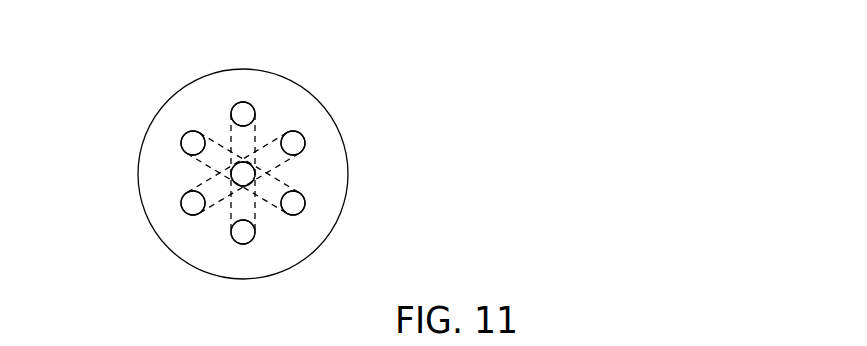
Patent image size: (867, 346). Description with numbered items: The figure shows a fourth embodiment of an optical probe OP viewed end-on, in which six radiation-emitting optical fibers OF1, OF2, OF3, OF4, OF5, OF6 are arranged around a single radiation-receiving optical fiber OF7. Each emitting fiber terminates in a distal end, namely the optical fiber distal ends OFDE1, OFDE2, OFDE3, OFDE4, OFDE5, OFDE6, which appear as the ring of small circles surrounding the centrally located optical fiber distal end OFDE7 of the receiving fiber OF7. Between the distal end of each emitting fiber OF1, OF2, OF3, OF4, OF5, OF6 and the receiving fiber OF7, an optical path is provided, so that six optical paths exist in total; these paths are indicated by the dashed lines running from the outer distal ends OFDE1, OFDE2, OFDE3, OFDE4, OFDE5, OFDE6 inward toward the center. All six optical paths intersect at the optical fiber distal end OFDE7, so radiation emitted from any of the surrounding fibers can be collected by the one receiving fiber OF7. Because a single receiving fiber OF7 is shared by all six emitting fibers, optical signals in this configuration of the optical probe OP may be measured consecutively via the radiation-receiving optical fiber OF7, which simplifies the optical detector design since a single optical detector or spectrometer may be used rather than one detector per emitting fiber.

The optical probe OP is at (247, 70).
The radiation-emitting optical fiber OF1 is at (245, 115).
The optical fiber distal end OFDE1 is at (254, 117).
The radiation-emitting optical fiber OF2 is at (294, 144).
The optical fiber distal end OFDE2 is at (303, 147).
The radiation-emitting optical fiber OF3 is at (294, 203).
The optical fiber distal end OFDE3 is at (305, 204).
The radiation-emitting optical fiber OF4 is at (245, 233).
The optical fiber distal end OFDE4 is at (246, 243).
The radiation-emitting optical fiber OF5 is at (191, 204).
The optical fiber distal end OFDE5 is at (181, 204).
The radiation-emitting optical fiber OF6 is at (192, 144).
The optical fiber distal end OFDE6 is at (182, 146).
The radiation-receiving optical fiber OF7 is at (248, 175).
The optical fiber distal end OFDE7 is at (253, 180).